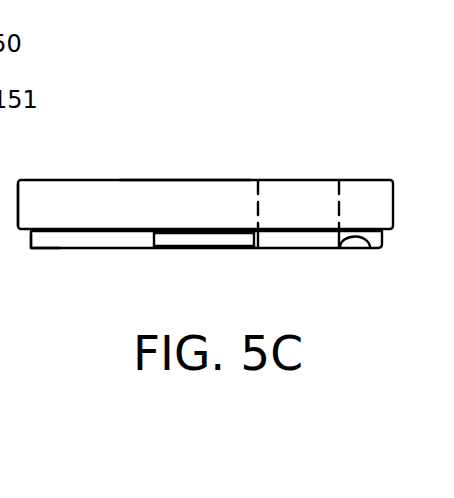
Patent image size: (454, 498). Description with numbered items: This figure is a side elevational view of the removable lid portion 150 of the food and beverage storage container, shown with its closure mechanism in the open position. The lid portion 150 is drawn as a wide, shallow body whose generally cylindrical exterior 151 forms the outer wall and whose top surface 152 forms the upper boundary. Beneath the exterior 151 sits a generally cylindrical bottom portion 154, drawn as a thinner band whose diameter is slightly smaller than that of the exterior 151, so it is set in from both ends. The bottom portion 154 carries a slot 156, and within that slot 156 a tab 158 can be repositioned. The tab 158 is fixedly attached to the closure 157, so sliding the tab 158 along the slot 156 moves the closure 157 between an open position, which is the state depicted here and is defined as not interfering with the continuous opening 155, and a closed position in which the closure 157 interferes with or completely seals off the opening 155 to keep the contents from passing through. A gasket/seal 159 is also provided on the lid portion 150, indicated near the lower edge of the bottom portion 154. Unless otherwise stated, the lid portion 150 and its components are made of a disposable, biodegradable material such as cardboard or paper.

The removable lid portion 150 is at (287, 98).
The generally cylindrical exterior 151 is at (18, 206).
The top surface 152 is at (178, 180).
The generally cylindrical bottom portion 154 is at (98, 249).
The continuous opening 155 is at (306, 180).
The slot 156 is at (340, 247).
The closure 157 is at (236, 239).
The tab 158 is at (152, 243).
The gasket/seal 159 is at (28, 241).